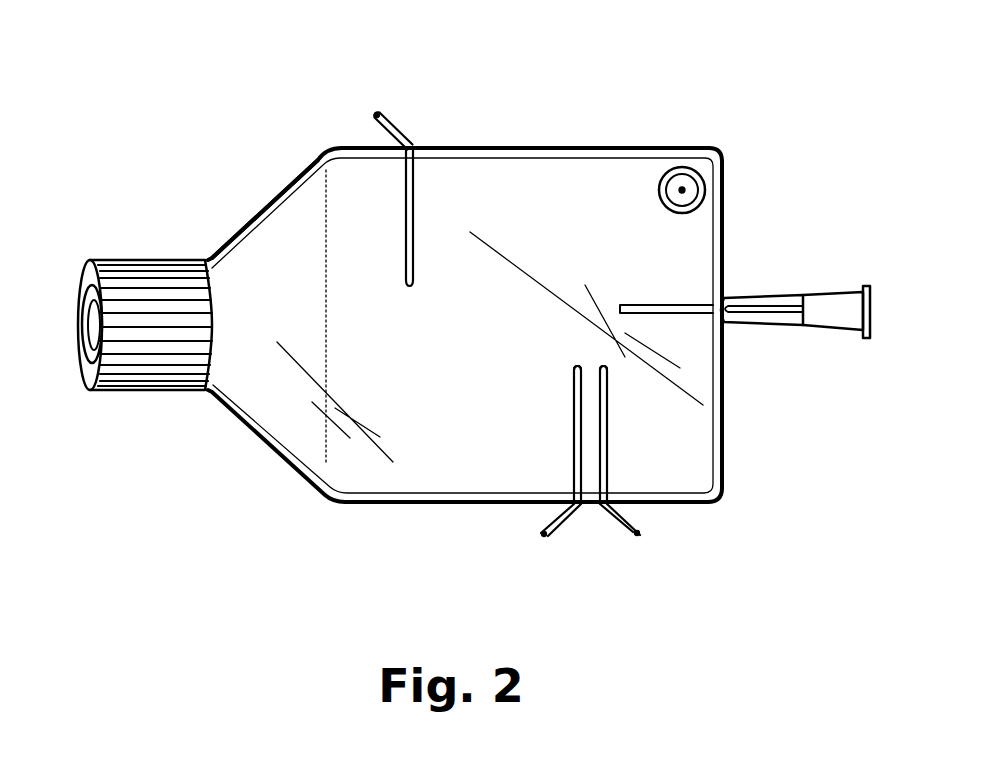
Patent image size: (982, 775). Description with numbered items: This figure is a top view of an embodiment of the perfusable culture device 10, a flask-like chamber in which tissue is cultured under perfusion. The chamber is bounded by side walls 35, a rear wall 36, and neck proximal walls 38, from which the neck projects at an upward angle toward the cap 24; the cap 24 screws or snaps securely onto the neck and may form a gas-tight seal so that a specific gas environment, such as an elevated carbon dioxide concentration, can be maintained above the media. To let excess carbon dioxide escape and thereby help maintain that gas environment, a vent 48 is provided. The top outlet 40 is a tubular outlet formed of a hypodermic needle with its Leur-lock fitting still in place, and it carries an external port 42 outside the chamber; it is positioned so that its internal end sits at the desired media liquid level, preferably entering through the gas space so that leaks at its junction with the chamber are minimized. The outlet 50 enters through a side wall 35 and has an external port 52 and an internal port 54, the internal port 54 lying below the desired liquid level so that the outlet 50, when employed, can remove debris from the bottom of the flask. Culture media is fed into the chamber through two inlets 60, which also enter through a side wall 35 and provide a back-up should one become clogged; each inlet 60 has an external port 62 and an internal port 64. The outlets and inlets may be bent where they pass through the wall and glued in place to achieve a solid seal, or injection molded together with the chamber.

The perfusable culture device 10 is at (521, 68).
The cap 24 is at (136, 260).
The side walls 35 is at (553, 147).
The rear wall 36 is at (726, 398).
The neck proximal walls 38 is at (250, 212).
The top outlet 40 is at (698, 207).
The external port 42 is at (681, 187).
The vent 48 is at (780, 302).
The outlet 50 is at (397, 127).
The external port 52 is at (377, 115).
The internal port 54 is at (410, 287).
The inlets 60 is at (612, 518).
The external port 62 is at (544, 534).
The internal port 64 is at (603, 363).